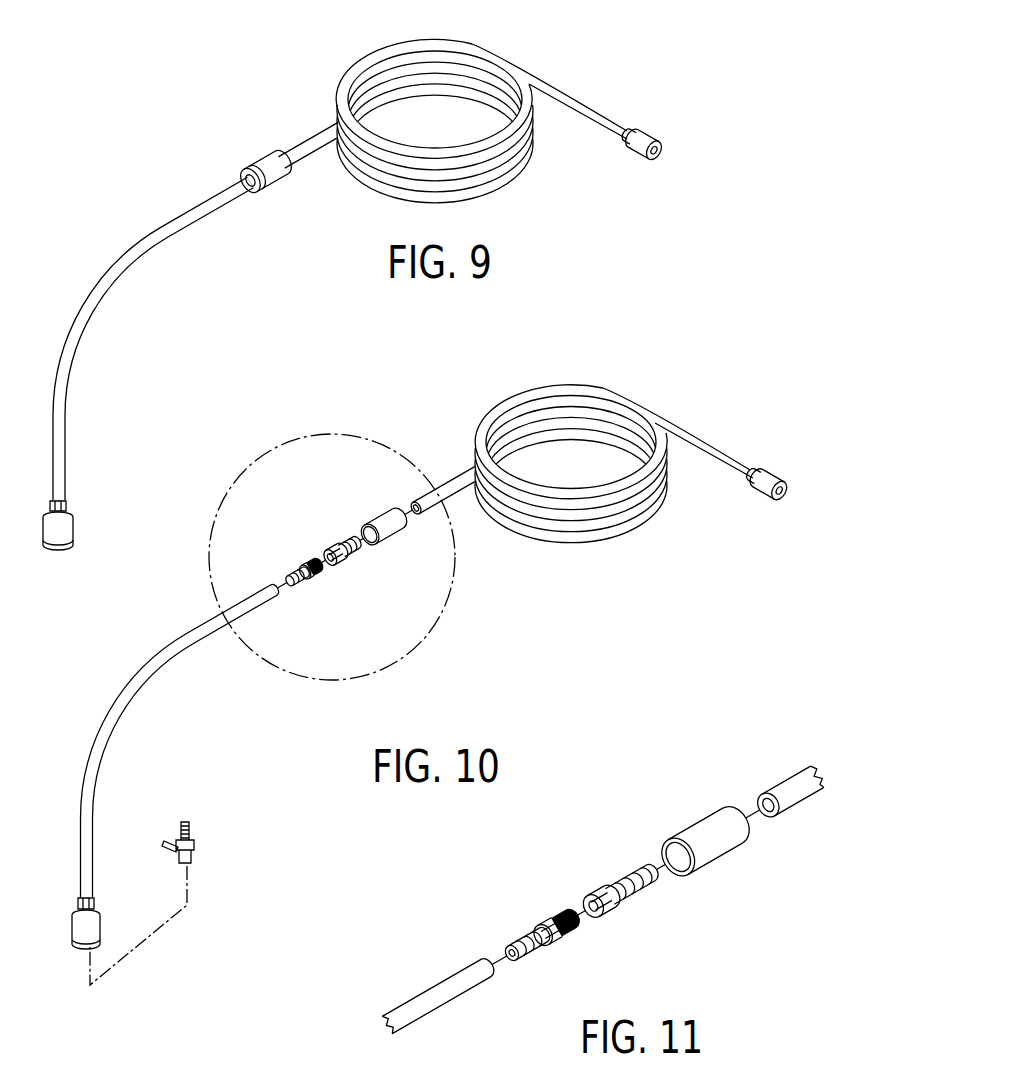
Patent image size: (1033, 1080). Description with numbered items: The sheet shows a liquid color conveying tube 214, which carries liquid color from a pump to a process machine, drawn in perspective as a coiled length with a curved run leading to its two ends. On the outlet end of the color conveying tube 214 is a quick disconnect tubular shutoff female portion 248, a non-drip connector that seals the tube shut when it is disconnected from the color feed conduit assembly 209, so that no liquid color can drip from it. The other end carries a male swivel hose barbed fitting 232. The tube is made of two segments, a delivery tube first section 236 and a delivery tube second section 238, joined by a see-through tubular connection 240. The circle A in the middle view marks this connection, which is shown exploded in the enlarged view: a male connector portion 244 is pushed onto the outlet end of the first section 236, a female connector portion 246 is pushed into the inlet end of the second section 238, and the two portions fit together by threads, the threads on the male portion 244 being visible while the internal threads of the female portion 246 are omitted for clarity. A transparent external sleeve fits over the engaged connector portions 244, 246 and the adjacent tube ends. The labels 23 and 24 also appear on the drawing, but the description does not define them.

In FIG. 9, the color conveying tube 214 is at (544, 50).
In FIG. 10, the color conveying tube 214 is at (677, 376).
In FIG. 9, the quick disconnect tubular shutoff female portion 248 is at (654, 132).
In FIG. 10, the quick disconnect tubular shutoff female portion 248 is at (774, 472).
In FIG. 9, the see-through tubular connection 240 is at (261, 162).
In FIG. 10, the see-through tubular connection 240 is at (339, 470).
In FIG. 9, the delivery tube second section 238 is at (316, 159).
In FIG. 10, the delivery tube second section 238 is at (445, 490).
In FIG. 11, the delivery tube second section 238 is at (800, 804).
In FIG. 9, the delivery tube first section 236 is at (83, 331).
In FIG. 10, the delivery tube first section 236 is at (112, 737).
In FIG. 11, the delivery tube first section 236 is at (436, 1000).
In FIG. 9, the male swivel hose barbed fitting 232 is at (66, 505).
In FIG. 9, the connector 23 is at (82, 522).
In FIG. 10, the circle A is at (447, 624).
In FIG. 11, the color feed conduit assembly 209 is at (743, 788).
In FIG. 11, the male connector portion 244 is at (538, 951).
In FIG. 11, the female connector portion 246 is at (621, 907).
In FIG. 11, the sleeve 24 is at (717, 857).